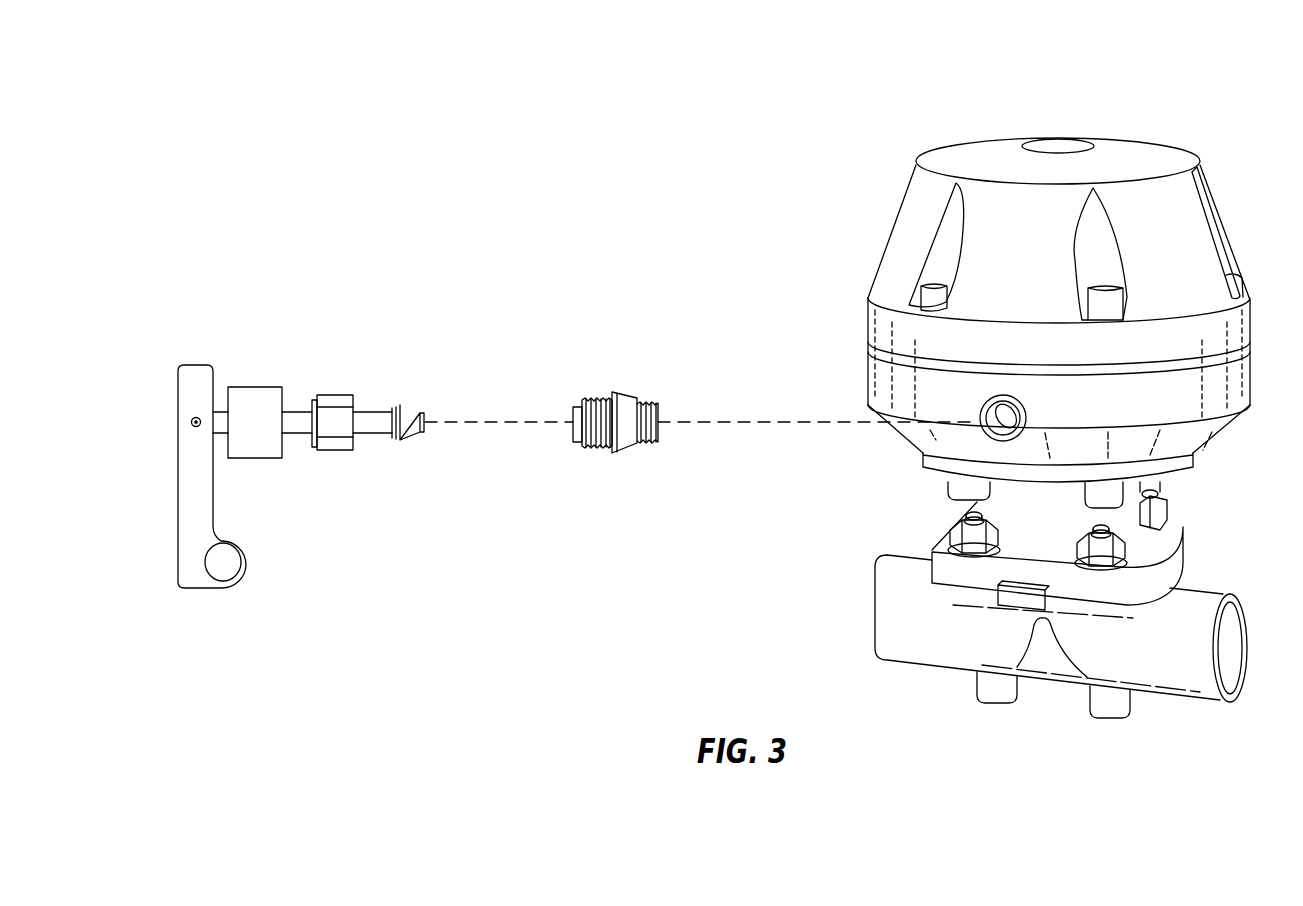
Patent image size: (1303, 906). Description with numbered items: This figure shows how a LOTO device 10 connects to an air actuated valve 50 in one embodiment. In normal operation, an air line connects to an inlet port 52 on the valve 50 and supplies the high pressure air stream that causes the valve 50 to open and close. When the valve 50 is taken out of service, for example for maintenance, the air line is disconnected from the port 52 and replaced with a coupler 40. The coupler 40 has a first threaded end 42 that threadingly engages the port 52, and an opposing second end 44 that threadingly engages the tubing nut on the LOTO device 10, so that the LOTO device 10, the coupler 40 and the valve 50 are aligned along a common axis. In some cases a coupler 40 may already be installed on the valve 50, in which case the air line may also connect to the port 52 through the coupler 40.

The LOTO device 10 is at (368, 312).
The coupler 40 is at (616, 382).
The first threaded end 42 is at (657, 407).
The second end 44 is at (590, 407).
The air actuated valve 50 is at (1054, 386).
The inlet port 52 is at (990, 430).